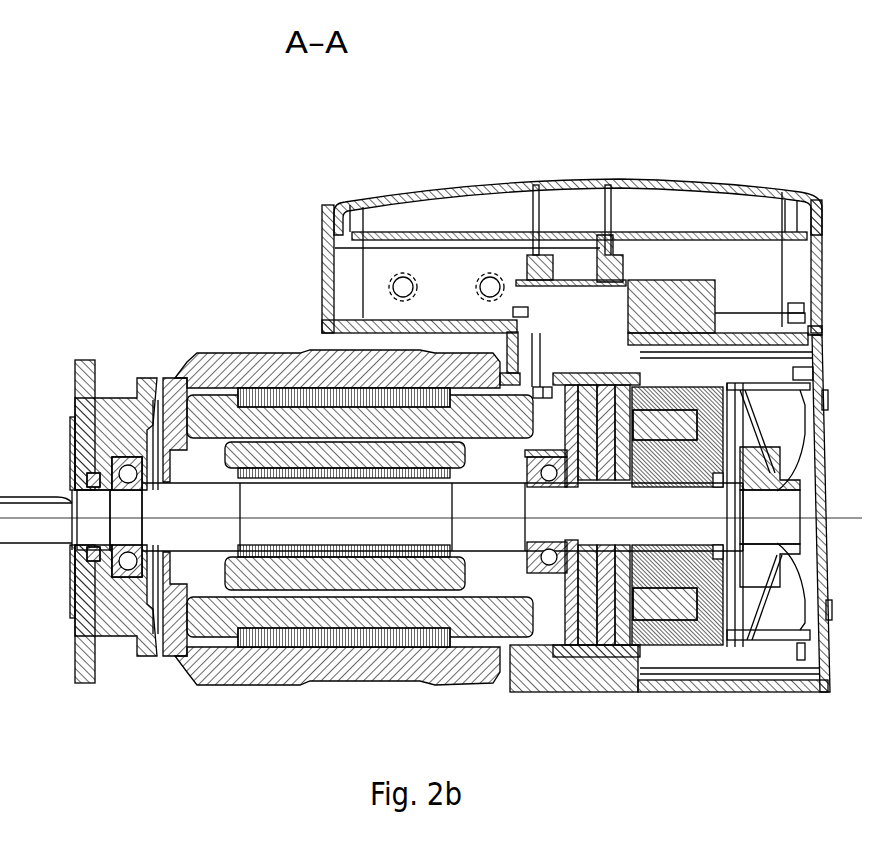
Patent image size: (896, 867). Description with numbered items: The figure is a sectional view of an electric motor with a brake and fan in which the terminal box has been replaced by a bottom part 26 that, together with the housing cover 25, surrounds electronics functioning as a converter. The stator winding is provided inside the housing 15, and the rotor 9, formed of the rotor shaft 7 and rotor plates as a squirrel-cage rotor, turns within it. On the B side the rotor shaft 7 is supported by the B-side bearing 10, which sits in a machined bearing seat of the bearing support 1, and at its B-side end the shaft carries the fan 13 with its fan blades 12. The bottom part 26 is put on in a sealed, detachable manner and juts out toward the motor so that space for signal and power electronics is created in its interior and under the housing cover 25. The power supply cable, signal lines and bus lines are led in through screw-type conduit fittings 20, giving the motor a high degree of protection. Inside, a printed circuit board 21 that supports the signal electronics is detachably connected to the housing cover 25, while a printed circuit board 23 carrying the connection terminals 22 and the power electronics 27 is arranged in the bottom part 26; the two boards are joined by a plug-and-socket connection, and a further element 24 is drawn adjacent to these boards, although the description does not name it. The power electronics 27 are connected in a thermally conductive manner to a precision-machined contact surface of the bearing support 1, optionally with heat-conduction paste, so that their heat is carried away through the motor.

The bearing support 1 is at (660, 337).
The rotor shaft 7 is at (178, 530).
The rotor 9 is at (232, 612).
The B-side bearing 10 is at (548, 562).
The fan blades 12 is at (785, 430).
The fan 13 is at (762, 468).
The housing 15 is at (343, 684).
The screw-type conduit fittings 20 is at (490, 275).
The printed circuit board 21 is at (403, 228).
The connection terminals 22 is at (540, 258).
The printed circuit board 23 is at (578, 280).
The block 24 is at (615, 242).
The housing cover 25 is at (738, 210).
The bottom part 26 is at (800, 258).
The power electronics 27 is at (700, 298).